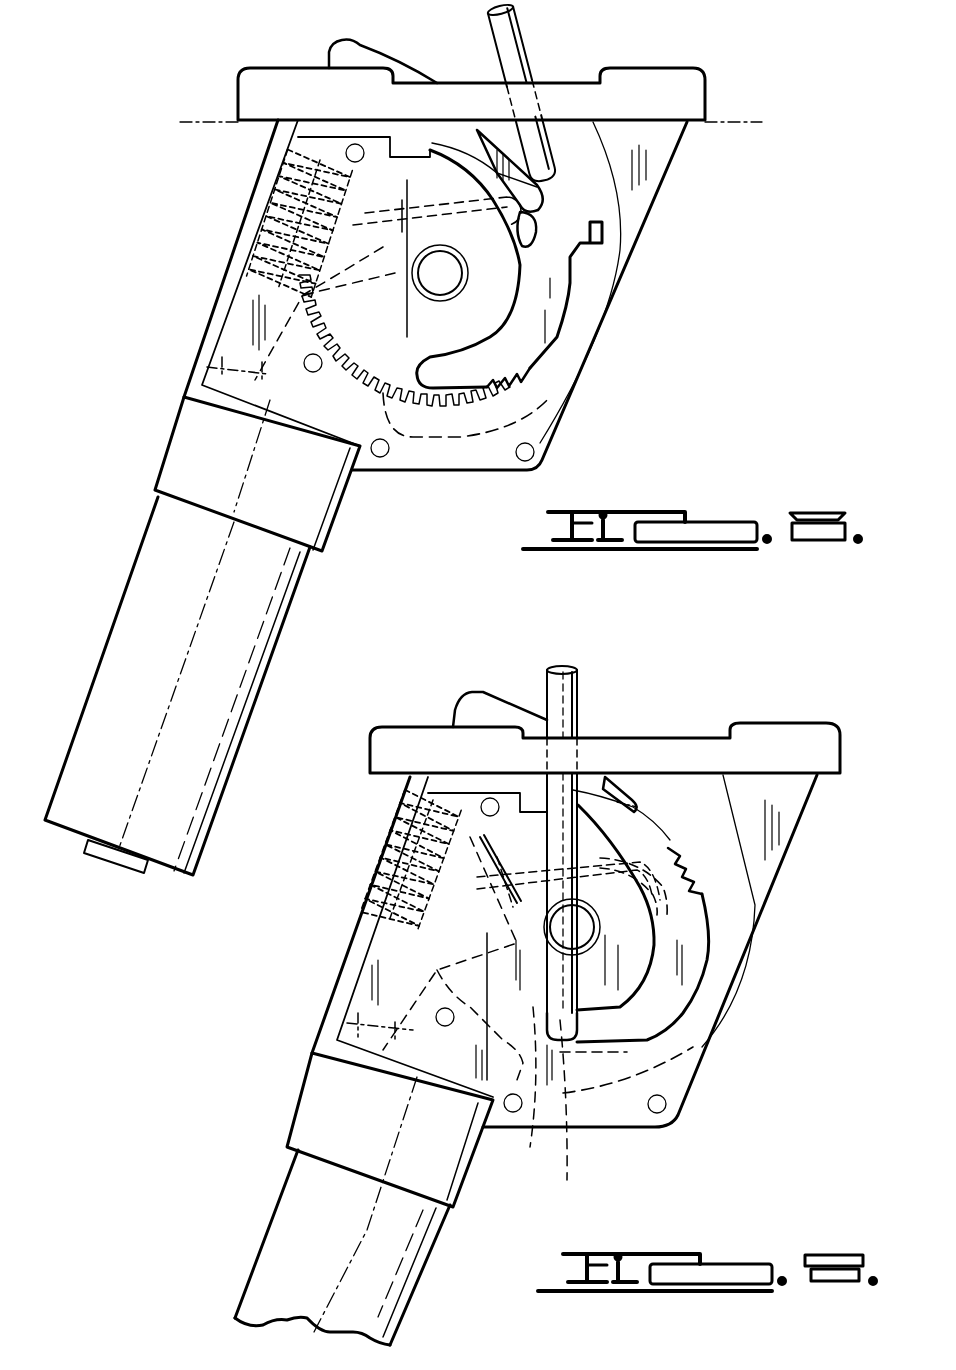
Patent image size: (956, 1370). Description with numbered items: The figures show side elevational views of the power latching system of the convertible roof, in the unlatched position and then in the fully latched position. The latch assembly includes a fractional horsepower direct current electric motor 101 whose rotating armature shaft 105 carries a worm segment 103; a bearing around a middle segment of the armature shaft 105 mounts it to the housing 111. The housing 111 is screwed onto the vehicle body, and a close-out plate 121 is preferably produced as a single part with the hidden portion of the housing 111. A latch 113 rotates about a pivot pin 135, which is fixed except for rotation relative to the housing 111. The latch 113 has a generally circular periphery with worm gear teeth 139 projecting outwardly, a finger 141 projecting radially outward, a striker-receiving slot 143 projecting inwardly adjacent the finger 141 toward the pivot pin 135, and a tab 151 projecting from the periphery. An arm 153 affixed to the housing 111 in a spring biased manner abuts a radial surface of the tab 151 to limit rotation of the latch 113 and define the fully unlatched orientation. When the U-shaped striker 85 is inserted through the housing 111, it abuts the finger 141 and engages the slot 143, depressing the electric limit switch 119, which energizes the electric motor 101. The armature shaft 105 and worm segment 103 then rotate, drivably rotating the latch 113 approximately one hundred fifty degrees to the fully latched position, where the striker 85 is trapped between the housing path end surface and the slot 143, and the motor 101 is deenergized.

In FIG. 8, the striker 85 is at (514, 28).
In FIG. 9, the striker 85 is at (578, 684).
In FIG. 8, the electric motor 101 is at (176, 637).
In FIG. 9, the electric motor 101 is at (283, 1227).
In FIG. 8, the worm segment 103 is at (240, 277).
In FIG. 9, the worm segment 103 is at (410, 840).
In FIG. 8, the armature shaft 105 is at (222, 366).
In FIG. 9, the armature shaft 105 is at (340, 1025).
In FIG. 8, the housing 111 is at (247, 228).
In FIG. 9, the housing 111 is at (640, 1120).
In FIG. 8, the latch 113 is at (562, 283).
In FIG. 9, the latch 113 is at (643, 833).
In FIG. 8, the electric limit switch 119 is at (398, 320).
In FIG. 9, the electric limit switch 119 is at (667, 917).
In FIG. 8, the close-out plate 121 is at (690, 82).
In FIG. 9, the close-out plate 121 is at (397, 737).
In FIG. 8, the pivot pin 135 is at (445, 262).
In FIG. 9, the pivot pin 135 is at (590, 937).
In FIG. 8, the worm gear teeth 139 is at (540, 377).
In FIG. 9, the worm gear teeth 139 is at (700, 879).
In FIG. 8, the finger 141 is at (607, 233).
In FIG. 9, the finger 141 is at (462, 1012).
In FIG. 8, the striker-receiving slot 143 is at (540, 218).
In FIG. 9, the striker-receiving slot 143 is at (568, 1024).
In FIG. 8, the tab 151 is at (530, 172).
In FIG. 8, the arm 153 is at (332, 52).
In FIG. 9, the arm 153 is at (487, 700).